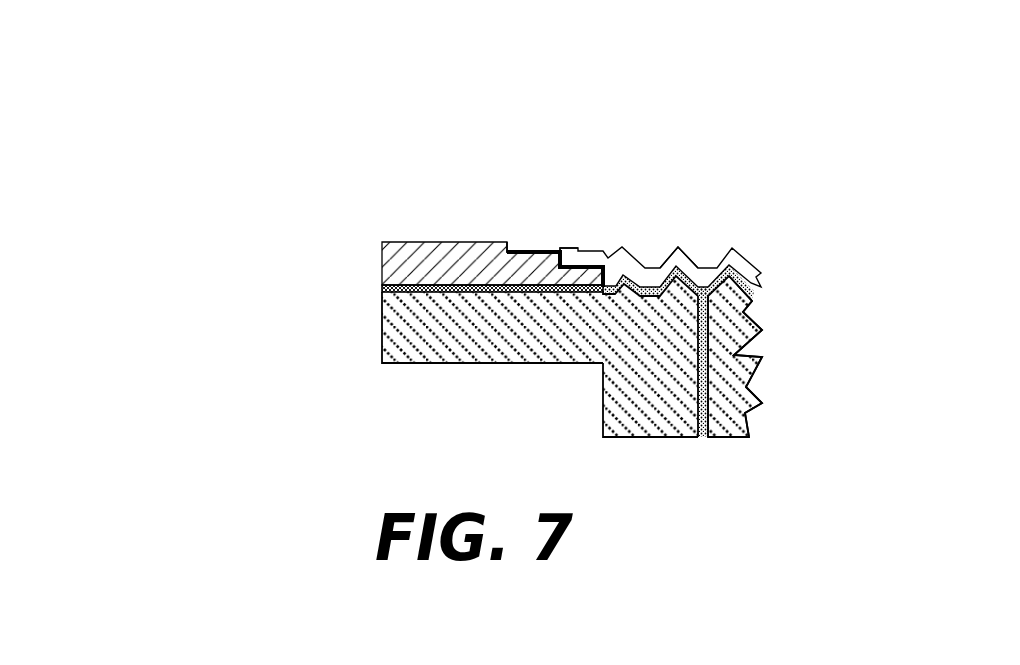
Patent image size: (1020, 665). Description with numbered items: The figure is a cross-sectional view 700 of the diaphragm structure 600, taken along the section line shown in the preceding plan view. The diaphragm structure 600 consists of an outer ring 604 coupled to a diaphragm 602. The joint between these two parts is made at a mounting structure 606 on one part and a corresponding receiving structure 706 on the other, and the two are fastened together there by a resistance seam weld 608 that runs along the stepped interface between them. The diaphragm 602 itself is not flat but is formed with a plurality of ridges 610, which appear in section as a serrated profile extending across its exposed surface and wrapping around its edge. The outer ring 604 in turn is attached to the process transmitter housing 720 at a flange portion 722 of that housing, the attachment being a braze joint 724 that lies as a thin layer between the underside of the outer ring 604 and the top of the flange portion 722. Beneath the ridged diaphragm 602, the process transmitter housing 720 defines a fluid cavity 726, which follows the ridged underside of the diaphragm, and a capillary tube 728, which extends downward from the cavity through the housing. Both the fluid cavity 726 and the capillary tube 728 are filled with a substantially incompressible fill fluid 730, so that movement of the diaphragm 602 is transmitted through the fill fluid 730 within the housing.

The cross-sectional view 700 is at (142, 116).
The diaphragm structure 600 is at (520, 192).
The diaphragm 602 is at (636, 258).
The outer ring 604 is at (382, 253).
The mounting structure 606 is at (555, 220).
The resistance seam weld 608 is at (505, 242).
The ridges 610 is at (676, 252).
The receiving structure 706 is at (560, 250).
The process transmitter housing 720 is at (602, 408).
The flange portion 722 is at (382, 328).
The braze joint 724 is at (382, 287).
The fluid cavity 726 is at (710, 287).
The capillary tube 728 is at (704, 472).
The fill fluid 730 is at (750, 293).